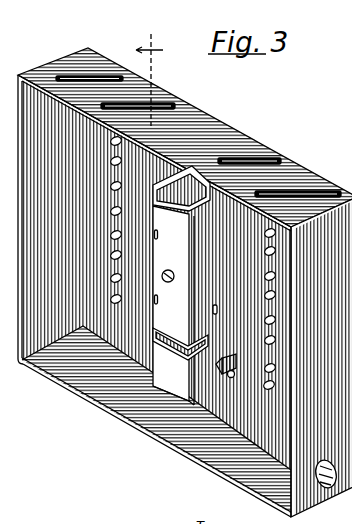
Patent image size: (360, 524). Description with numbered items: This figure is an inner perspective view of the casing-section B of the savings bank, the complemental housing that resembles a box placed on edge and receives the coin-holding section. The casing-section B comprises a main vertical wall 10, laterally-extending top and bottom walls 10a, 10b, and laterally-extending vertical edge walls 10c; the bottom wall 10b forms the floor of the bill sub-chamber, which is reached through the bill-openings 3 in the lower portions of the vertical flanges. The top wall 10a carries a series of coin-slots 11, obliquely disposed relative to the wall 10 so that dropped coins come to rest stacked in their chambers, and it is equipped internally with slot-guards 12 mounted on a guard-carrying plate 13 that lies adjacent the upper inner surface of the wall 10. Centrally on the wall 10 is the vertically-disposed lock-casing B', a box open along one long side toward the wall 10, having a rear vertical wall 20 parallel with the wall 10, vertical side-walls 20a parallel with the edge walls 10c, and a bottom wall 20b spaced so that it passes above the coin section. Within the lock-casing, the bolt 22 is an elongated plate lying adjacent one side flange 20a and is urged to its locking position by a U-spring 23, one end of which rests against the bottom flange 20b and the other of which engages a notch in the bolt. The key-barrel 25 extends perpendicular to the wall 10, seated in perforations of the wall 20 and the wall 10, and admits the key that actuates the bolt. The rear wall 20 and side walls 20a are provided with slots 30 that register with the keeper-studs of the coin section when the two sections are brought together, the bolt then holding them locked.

The vertical wall 10 is at (180, 286).
The top wall 10a is at (195, 108).
The bottom wall 10b is at (92, 338).
The vertical edge wall 10c is at (15, 231).
The coin-slot 11 is at (58, 69).
The slot-guard 12 is at (78, 69).
The guard-carrying plate 13 is at (152, 68).
The casing-section B is at (297, 310).
The lock-casing B' is at (173, 305).
The vertical wall 20 is at (214, 329).
The vertical side-wall 20a is at (209, 302).
The bottom wall 20b is at (200, 394).
The bolt 22 is at (222, 356).
The U-spring 23 is at (227, 366).
The key-barrel 25 is at (175, 290).
The slot 30 is at (150, 182).
The bill-opening 3 is at (319, 484).